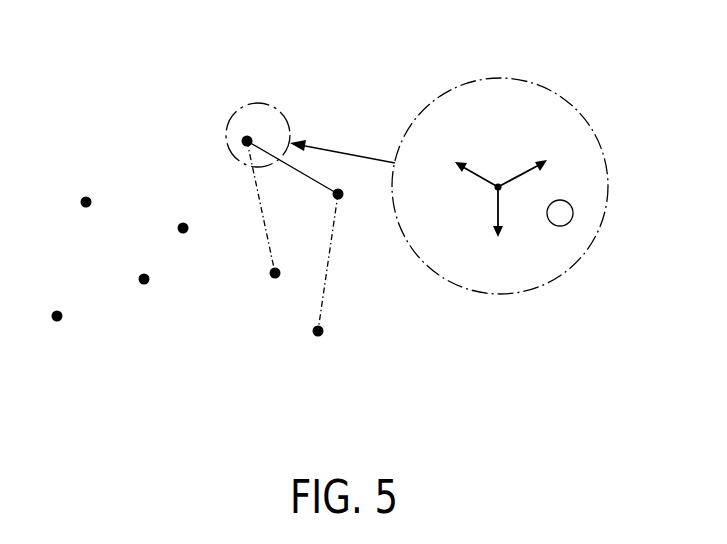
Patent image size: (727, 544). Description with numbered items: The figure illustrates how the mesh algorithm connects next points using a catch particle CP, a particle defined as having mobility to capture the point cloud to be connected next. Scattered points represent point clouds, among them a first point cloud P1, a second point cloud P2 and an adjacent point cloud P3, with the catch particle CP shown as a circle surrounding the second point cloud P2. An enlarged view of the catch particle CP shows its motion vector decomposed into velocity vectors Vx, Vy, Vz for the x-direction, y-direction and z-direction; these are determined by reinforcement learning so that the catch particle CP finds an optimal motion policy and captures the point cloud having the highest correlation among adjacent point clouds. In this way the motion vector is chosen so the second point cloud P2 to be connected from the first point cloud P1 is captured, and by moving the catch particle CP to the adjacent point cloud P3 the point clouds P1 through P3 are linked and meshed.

The catch particle CP is at (280, 108).
The first point cloud P1 is at (350, 207).
The second point cloud P2 is at (640, 217).
The adjacent point cloud P3 is at (264, 286).
The x-direction velocity vector Vx is at (535, 167).
The y-direction velocity vector Vy is at (498, 227).
The z-direction velocity vector Vz is at (460, 167).